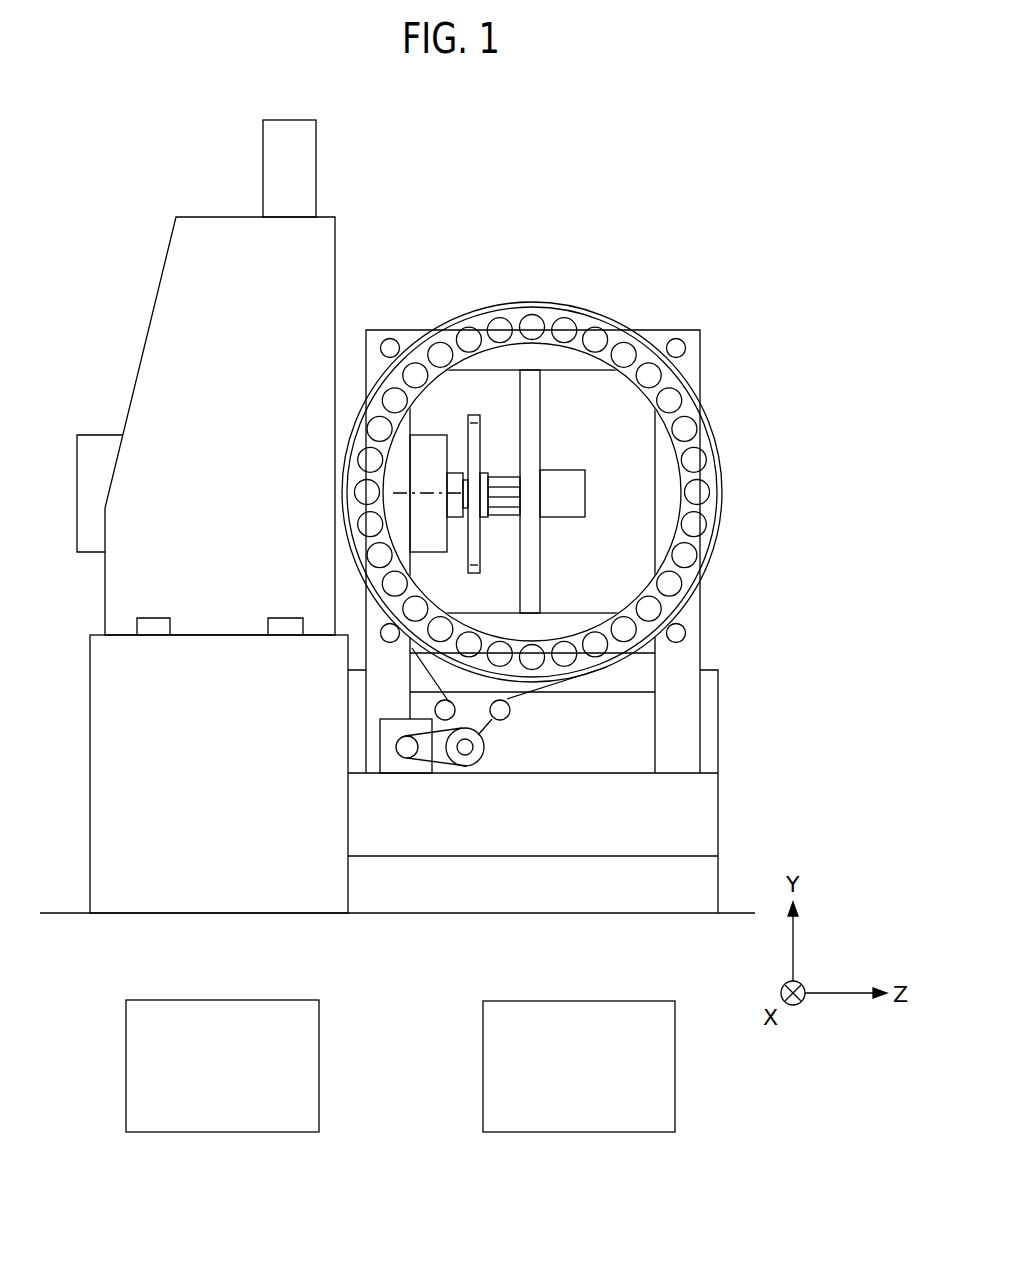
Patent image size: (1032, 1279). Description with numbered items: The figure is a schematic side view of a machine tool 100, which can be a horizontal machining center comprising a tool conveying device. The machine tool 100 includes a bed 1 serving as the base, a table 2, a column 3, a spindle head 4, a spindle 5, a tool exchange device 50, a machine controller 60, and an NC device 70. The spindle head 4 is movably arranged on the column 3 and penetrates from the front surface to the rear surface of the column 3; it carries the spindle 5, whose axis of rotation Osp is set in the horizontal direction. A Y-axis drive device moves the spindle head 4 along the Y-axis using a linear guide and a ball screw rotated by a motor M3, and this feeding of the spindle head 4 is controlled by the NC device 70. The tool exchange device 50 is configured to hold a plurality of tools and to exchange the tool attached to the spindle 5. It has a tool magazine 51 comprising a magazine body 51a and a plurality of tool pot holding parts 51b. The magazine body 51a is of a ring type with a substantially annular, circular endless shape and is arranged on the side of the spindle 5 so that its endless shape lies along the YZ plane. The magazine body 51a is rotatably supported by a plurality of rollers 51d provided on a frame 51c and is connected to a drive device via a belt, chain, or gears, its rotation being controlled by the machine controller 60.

The machine tool 100 is at (93, 136).
The bed 1 is at (678, 815).
The table 2 is at (572, 614).
The column 3 is at (190, 276).
The spindle head 4 is at (432, 447).
The spindle 5 is at (457, 473).
The motor M3 is at (316, 157).
The axis of rotation of the spindle Osp is at (400, 490).
The tool exchange device 50 is at (586, 430).
The tool magazine 51 is at (733, 497).
The magazine body 51a is at (690, 410).
The tool pot holding parts 51b is at (565, 327).
The frame 51c is at (685, 333).
The rollers 51d is at (390, 347).
The machine controller 60 is at (320, 1068).
The NC device 70 is at (677, 1068).